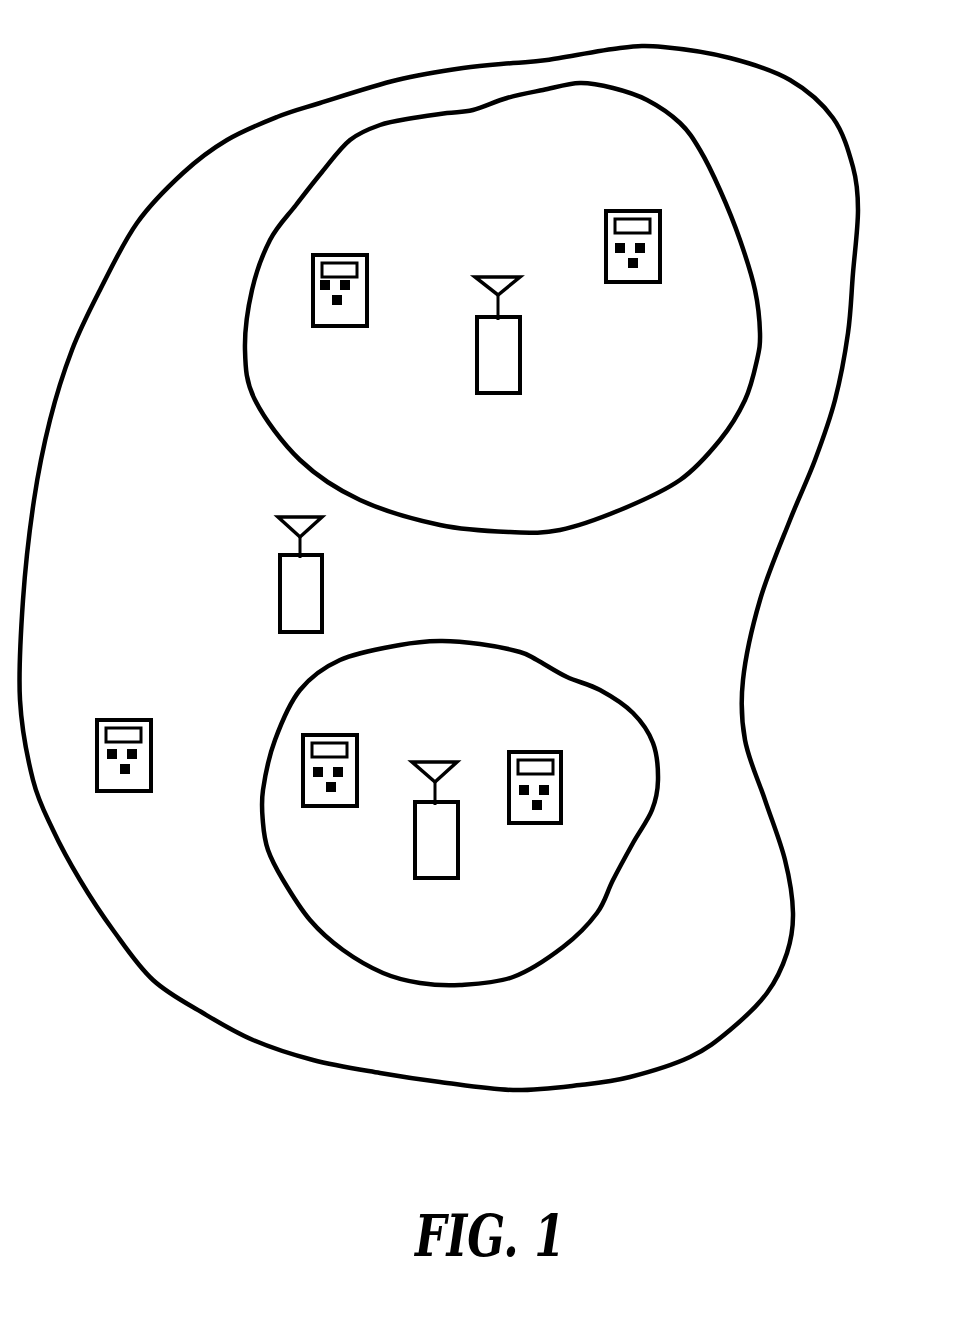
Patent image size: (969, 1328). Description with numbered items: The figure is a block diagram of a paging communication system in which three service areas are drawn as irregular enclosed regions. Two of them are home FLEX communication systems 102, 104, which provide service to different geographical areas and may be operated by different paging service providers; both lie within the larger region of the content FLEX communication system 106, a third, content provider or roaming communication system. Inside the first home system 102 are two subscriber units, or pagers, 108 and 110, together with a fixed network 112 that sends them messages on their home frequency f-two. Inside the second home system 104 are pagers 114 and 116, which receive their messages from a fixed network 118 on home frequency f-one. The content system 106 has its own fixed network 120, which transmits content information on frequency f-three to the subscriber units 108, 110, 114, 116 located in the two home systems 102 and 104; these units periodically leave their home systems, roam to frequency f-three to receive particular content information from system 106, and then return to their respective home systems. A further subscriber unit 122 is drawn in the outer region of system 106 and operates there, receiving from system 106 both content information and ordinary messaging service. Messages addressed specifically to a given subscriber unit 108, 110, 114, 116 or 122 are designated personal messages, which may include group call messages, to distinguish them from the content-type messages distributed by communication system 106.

The home FLEX communication system 102 is at (538, 661).
The home FLEX communication system 104 is at (680, 125).
The content FLEX communication system 106 is at (685, 48).
The subscriber unit 108 is at (340, 256).
The subscriber unit 110 is at (635, 210).
The fixed network 112 is at (487, 277).
The subscriber unit 114 is at (322, 735).
The subscriber unit 116 is at (522, 752).
The fixed network 118 is at (430, 762).
The fixed network 120 is at (280, 607).
The subscriber unit 122 is at (118, 719).